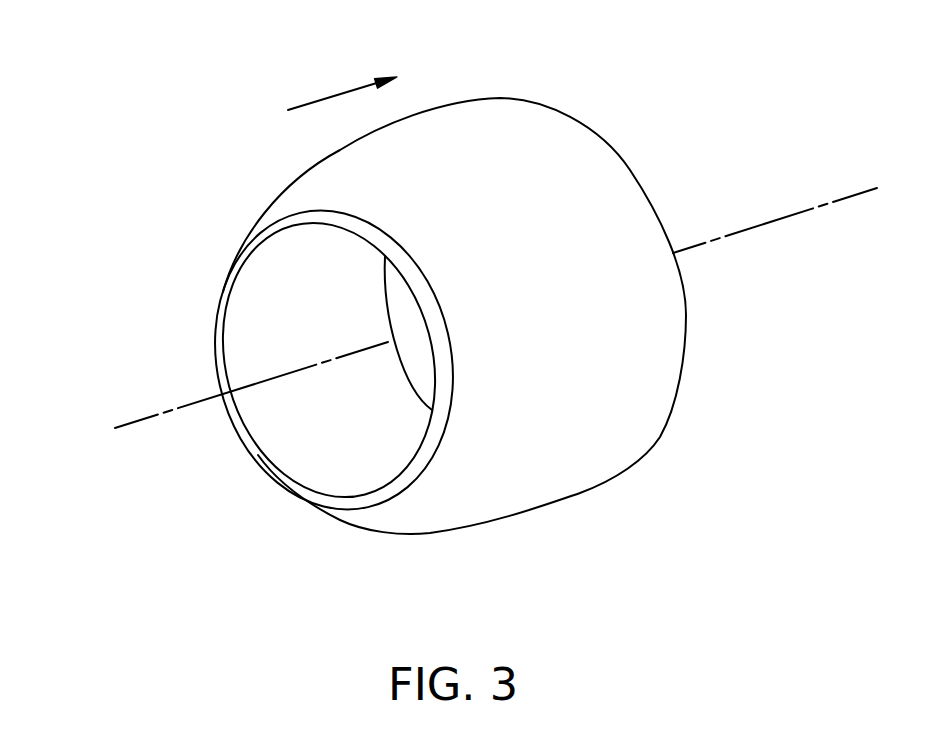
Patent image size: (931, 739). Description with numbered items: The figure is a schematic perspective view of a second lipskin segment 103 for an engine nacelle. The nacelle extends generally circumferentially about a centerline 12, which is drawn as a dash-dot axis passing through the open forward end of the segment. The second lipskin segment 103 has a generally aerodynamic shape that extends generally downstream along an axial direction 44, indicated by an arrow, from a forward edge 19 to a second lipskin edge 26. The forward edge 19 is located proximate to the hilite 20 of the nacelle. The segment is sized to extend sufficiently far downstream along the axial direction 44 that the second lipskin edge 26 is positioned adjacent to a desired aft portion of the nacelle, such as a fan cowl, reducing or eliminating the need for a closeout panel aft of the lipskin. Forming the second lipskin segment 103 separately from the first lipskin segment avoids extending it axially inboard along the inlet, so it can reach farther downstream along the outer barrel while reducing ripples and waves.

The centerline 12 is at (157, 413).
The forward edge 19 is at (254, 249).
The hilite 20 is at (266, 228).
The second lipskin edge 26 is at (632, 170).
The axial direction 44 is at (308, 102).
The second lipskin segment 103 is at (493, 78).